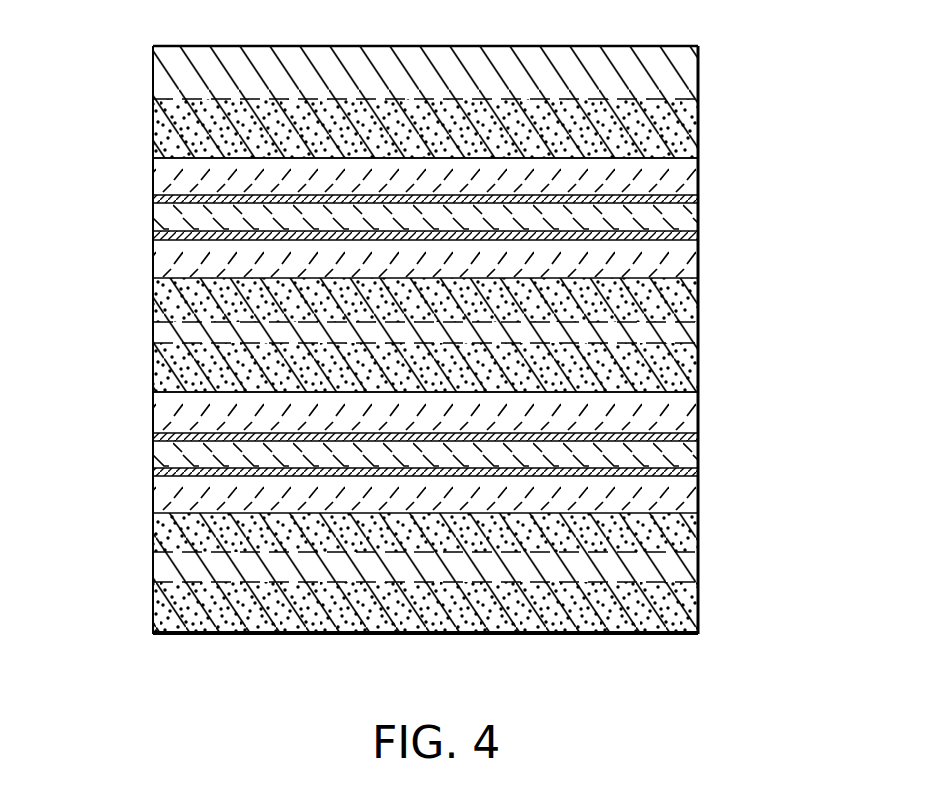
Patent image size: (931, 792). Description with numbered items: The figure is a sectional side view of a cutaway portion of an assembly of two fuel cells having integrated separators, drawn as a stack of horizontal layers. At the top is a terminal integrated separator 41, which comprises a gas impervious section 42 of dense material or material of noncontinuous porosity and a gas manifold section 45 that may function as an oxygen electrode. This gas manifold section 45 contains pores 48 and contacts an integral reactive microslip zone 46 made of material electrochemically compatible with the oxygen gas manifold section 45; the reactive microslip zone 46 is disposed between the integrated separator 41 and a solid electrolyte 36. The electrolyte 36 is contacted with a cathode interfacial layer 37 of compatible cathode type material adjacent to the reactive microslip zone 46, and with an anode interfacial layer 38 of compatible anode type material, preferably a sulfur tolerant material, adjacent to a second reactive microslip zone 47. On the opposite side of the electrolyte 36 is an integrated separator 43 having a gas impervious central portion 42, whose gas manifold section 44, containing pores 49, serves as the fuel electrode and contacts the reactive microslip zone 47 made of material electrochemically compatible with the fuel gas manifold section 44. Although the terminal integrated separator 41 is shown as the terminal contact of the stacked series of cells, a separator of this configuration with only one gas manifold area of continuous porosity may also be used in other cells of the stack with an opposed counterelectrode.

The solid electrolyte 36 is at (698, 210).
The cathode interfacial layer 37 is at (698, 196).
The anode interfacial layer 38 is at (698, 236).
The terminal integrated separator 41 is at (123, 46).
The gas impervious section 42 is at (685, 61).
The integrated separator 43 is at (128, 283).
The gas manifold section 44 is at (683, 307).
The gas manifold section 45 is at (670, 143).
The reactive microslip zone 46 is at (683, 172).
The reactive microslip zone 47 is at (697, 265).
The pores 48 is at (675, 108).
The pores 49 is at (700, 287).